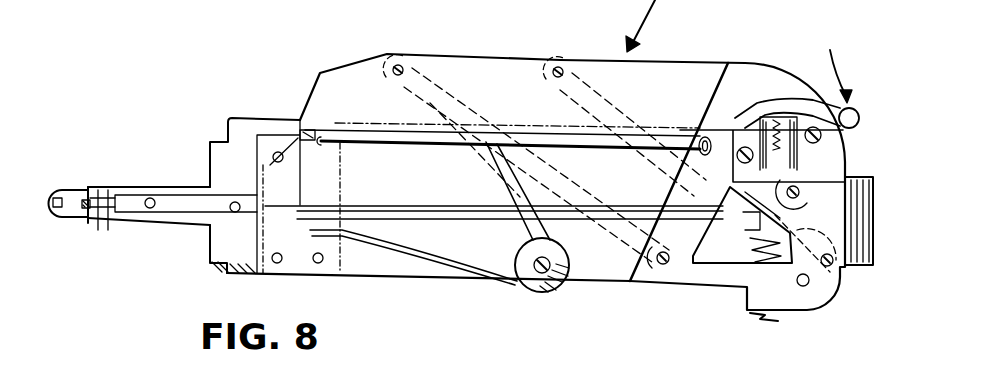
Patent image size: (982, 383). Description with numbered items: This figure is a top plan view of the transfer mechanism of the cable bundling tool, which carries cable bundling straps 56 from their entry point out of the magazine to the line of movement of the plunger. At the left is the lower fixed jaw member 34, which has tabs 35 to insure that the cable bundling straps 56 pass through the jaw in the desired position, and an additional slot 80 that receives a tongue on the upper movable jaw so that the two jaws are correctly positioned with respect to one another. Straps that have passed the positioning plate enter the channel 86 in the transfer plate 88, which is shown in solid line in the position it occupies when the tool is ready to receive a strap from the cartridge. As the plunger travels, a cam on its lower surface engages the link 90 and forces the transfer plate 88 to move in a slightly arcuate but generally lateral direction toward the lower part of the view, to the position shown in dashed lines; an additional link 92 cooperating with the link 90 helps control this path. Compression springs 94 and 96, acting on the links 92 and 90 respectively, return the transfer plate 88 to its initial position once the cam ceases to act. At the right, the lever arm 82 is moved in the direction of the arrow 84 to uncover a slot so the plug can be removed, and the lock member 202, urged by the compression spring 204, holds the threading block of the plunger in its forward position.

The lower fixed jaw member 34 is at (58, 222).
The tabs 35 is at (108, 230).
The cable bundling straps 56 is at (592, 143).
The slot 80 is at (53, 203).
The lever arm 82 is at (860, 115).
The arrow 84 is at (858, 72).
The channel 86 is at (315, 131).
The transfer plate 88 is at (682, 77).
The link 90 is at (837, 276).
The additional link 92 is at (625, 242).
The compression spring 94 is at (453, 270).
The compression spring 96 is at (757, 250).
The lock member 202 is at (802, 189).
The compression spring 204 is at (780, 120).